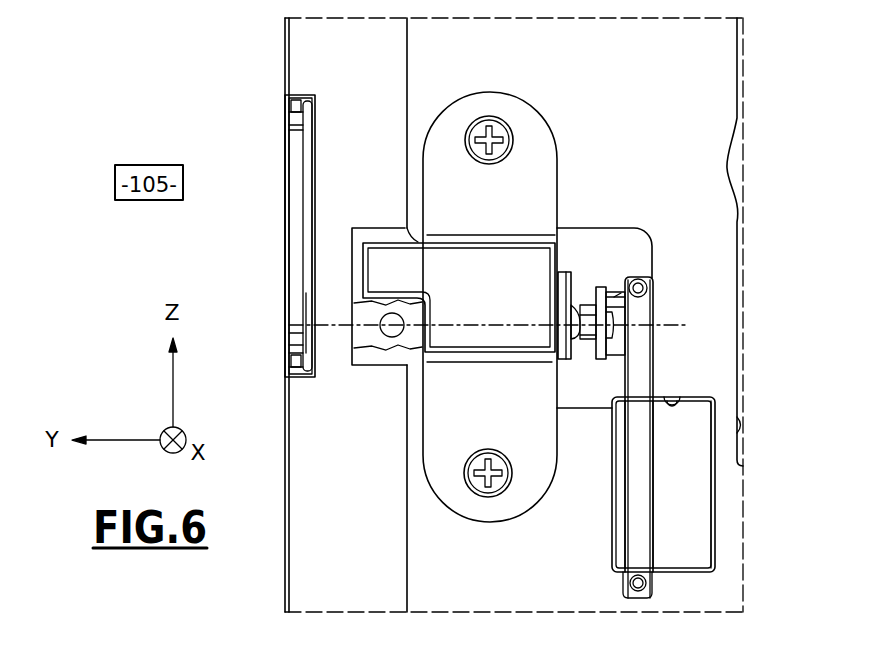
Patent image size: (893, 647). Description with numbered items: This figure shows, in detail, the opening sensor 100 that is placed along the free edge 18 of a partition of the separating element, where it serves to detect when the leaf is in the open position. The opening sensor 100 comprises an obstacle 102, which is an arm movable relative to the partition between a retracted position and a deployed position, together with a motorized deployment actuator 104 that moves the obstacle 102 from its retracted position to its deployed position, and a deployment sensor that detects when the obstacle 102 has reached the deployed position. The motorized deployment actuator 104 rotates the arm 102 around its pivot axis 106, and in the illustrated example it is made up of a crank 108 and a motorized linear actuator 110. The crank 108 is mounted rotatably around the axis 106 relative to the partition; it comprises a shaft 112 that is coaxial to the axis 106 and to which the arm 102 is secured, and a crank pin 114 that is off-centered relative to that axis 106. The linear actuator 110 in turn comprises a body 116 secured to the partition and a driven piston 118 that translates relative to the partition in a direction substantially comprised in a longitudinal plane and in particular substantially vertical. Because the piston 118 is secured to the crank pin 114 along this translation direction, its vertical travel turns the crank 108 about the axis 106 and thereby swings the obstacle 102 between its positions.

The free edge 18 is at (287, 508).
The opening sensor 100 is at (640, 94).
The obstacle 102 is at (297, 165).
The motorized deployment actuator 104 is at (697, 530).
The pivot axis 106 is at (295, 325).
The crank 108 is at (606, 266).
The motorized linear actuator 110 is at (696, 492).
The shaft 112 is at (603, 363).
The crank pin 114 is at (652, 290).
The body 116 is at (623, 550).
The piston 118 is at (650, 300).